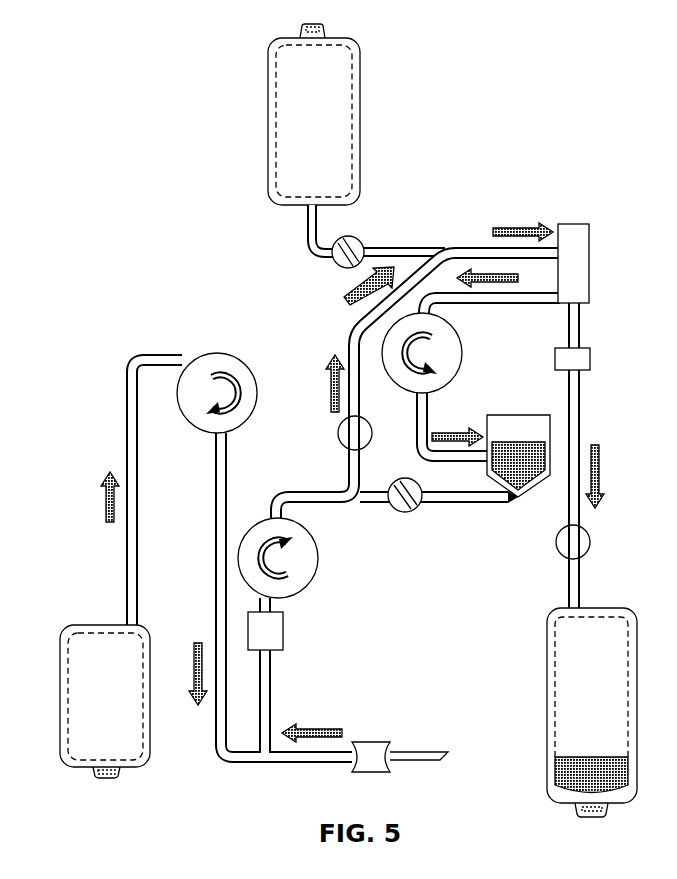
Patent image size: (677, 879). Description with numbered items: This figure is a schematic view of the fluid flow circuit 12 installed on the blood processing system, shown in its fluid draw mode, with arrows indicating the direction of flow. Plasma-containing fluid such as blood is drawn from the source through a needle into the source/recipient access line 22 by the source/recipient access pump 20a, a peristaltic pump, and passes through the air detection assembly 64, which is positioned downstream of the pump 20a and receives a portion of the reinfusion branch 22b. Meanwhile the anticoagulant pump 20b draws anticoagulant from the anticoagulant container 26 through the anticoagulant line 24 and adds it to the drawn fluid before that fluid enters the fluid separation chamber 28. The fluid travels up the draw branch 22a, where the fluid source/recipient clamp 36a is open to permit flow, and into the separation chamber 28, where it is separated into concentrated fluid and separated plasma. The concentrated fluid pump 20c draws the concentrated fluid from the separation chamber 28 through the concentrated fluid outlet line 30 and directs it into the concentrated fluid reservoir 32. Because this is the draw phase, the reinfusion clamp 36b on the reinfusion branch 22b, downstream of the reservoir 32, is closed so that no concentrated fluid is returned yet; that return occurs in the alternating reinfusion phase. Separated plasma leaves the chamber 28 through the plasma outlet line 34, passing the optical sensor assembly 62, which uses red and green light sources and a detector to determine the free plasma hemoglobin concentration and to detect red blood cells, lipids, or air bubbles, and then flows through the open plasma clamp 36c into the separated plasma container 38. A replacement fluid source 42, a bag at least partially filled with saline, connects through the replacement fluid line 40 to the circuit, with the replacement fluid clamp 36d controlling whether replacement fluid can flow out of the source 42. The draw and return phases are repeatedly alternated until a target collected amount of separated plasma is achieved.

The fluid flow circuit 12 is at (230, 233).
The source/recipient access pump 20a is at (298, 560).
The anticoagulant pump 20b is at (221, 352).
The concentrated fluid pump 20c is at (472, 354).
The source/recipient access line 22 is at (273, 663).
The draw branch 22a is at (350, 330).
The reinfusion branch 22b is at (465, 503).
The anticoagulant line 24 is at (127, 388).
The anticoagulant container 26 is at (92, 705).
The fluid separation chamber 28 is at (592, 264).
The concentrated fluid outlet line 30 is at (428, 407).
The concentrated fluid reservoir 32 is at (560, 435).
The plasma outlet line 34 is at (583, 578).
The fluid source/recipient clamp 36a is at (332, 438).
The reinfusion clamp 36b is at (420, 516).
The plasma clamp 36c is at (556, 546).
The replacement fluid clamp 36d is at (364, 231).
The separated plasma container 38 is at (576, 690).
The replacement fluid line 40 is at (300, 237).
The replacement fluid source 42 is at (300, 123).
The optical sensor assembly 62 is at (590, 358).
The air detection assembly 64 is at (285, 632).